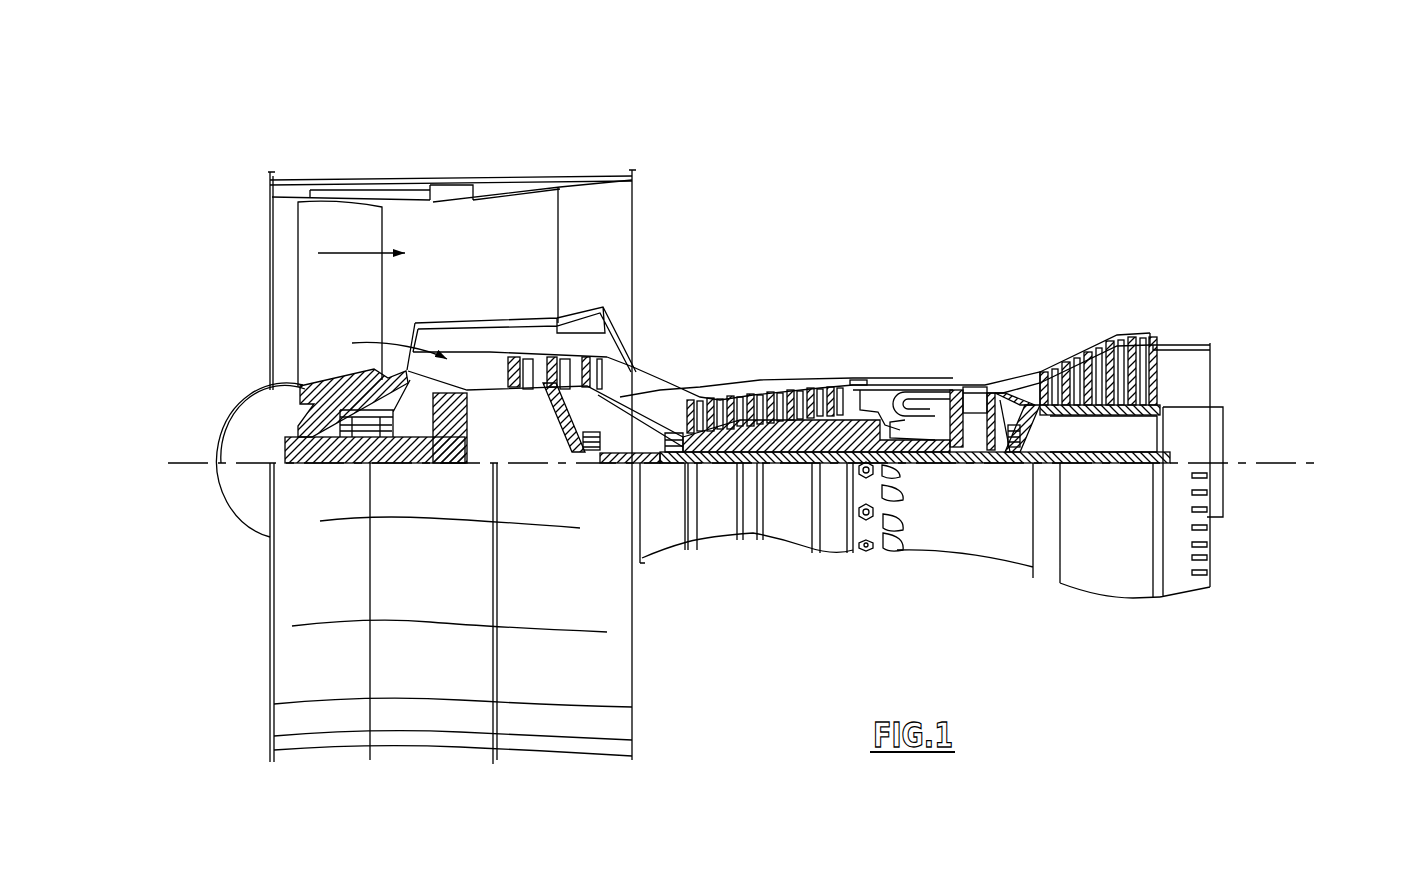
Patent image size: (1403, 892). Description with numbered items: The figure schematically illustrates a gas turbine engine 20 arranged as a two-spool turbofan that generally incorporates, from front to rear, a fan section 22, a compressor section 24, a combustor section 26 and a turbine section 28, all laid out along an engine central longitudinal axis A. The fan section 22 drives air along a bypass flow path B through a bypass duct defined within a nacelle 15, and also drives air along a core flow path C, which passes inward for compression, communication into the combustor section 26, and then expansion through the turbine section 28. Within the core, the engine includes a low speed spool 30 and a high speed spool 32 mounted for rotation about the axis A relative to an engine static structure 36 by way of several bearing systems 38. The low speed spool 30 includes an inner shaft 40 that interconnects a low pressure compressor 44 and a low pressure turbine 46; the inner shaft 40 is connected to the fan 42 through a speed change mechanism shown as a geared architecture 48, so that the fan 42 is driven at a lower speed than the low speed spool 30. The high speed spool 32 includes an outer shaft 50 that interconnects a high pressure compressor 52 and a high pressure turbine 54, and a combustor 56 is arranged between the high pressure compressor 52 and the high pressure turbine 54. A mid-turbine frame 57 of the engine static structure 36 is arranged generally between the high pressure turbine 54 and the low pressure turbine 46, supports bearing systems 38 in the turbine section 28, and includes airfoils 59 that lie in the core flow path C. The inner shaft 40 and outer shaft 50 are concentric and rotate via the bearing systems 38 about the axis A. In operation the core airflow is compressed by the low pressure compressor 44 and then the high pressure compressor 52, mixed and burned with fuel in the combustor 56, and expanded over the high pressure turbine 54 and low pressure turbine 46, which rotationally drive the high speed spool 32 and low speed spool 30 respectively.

The gas turbine engine 20 is at (912, 228).
The fan section 22 is at (381, 171).
The nacelle 15 is at (453, 183).
The compressor section 24 is at (684, 370).
The combustor section 26 is at (903, 357).
The turbine section 28 is at (1050, 322).
The low speed spool 30 is at (790, 470).
The high speed spool 32 is at (838, 398).
The engine static structure 36 is at (828, 555).
The bearing systems 38 is at (590, 448).
The inner shaft 40 is at (652, 465).
The fan 42 is at (355, 307).
The low pressure compressor 44 is at (553, 373).
The low pressure turbine 46 is at (1098, 347).
The geared architecture 48 is at (457, 445).
The outer shaft 50 is at (918, 443).
The high pressure compressor 52 is at (770, 428).
The high pressure turbine 54 is at (970, 383).
The combustor 56 is at (908, 403).
The mid-turbine frame 57 is at (1015, 382).
The airfoils 59 is at (1035, 415).
The engine central longitudinal axis A is at (1300, 463).
The bypass flow path B is at (352, 253).
The core flow path C is at (390, 344).